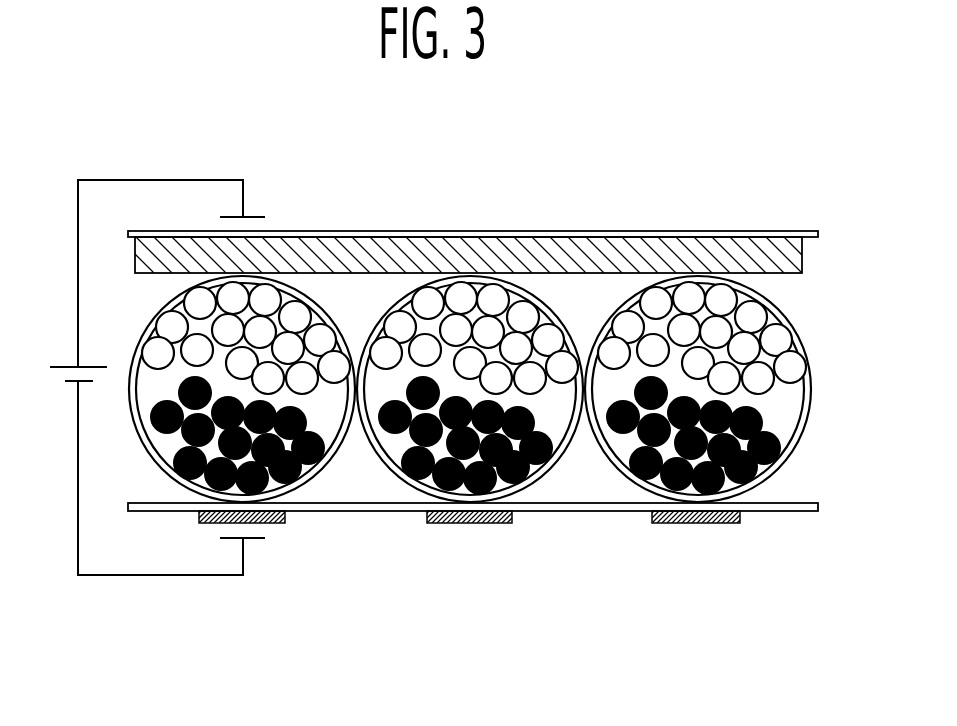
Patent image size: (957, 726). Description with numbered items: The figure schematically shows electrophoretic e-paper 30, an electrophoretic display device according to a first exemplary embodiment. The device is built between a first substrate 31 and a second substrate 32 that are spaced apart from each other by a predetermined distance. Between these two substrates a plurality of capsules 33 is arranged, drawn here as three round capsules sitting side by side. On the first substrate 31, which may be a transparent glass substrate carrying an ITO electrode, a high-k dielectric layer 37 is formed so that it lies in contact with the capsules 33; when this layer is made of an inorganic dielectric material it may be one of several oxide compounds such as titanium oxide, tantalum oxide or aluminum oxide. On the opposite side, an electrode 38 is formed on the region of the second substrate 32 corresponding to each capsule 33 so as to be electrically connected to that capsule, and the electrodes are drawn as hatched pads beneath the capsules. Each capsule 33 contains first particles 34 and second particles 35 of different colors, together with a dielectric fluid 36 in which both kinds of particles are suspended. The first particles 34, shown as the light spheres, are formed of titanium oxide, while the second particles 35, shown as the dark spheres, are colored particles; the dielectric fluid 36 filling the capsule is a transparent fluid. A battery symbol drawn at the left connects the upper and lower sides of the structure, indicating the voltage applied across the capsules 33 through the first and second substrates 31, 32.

The electrophoretic e-paper 30 is at (815, 158).
The first substrate 31 is at (400, 238).
The high-k dielectric layer 37 is at (505, 248).
The second substrate 32 is at (348, 511).
The electrode 38 is at (463, 527).
The capsule 33 is at (803, 348).
The first particles 34 is at (763, 312).
The second particles 35 is at (782, 445).
The dielectric fluid 36 is at (792, 397).